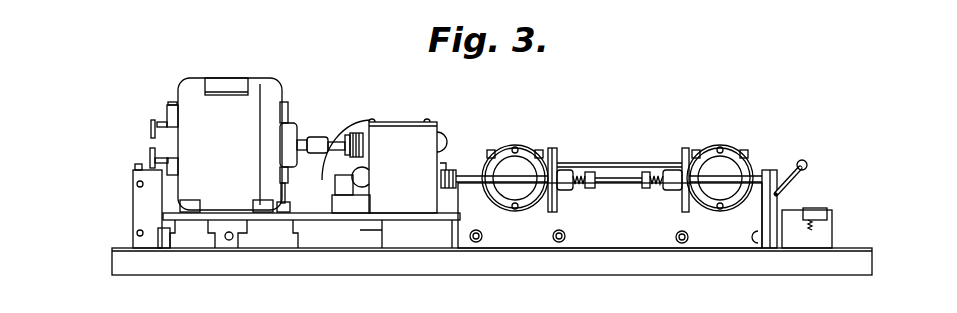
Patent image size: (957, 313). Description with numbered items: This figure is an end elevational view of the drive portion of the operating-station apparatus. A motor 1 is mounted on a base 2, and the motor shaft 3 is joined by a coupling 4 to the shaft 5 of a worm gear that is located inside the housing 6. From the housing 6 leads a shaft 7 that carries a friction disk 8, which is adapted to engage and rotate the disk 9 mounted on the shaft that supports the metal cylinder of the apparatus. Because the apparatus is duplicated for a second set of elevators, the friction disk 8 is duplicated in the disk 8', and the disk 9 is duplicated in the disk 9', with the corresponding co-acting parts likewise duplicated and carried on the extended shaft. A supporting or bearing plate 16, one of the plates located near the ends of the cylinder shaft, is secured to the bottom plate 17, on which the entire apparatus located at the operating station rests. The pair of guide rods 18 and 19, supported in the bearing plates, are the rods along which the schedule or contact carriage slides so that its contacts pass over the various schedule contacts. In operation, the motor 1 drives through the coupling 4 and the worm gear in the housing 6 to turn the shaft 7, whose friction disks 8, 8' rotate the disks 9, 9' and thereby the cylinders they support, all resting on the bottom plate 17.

The motor 1 is at (256, 92).
The base 2 is at (318, 213).
The motor shaft 3 is at (302, 137).
The coupling 4 is at (318, 138).
The worm gear shaft 5 is at (347, 142).
The housing 6 is at (418, 142).
The shaft 7 is at (472, 170).
The friction disk 8 is at (576, 165).
The friction disk 8' is at (704, 159).
The disk 9 is at (515, 162).
The disk 9' is at (731, 170).
The supporting or bearing plate 16 is at (633, 168).
The bottom plate 17 is at (419, 247).
The guide rod 18 is at (567, 236).
The guide rod 19 is at (482, 236).